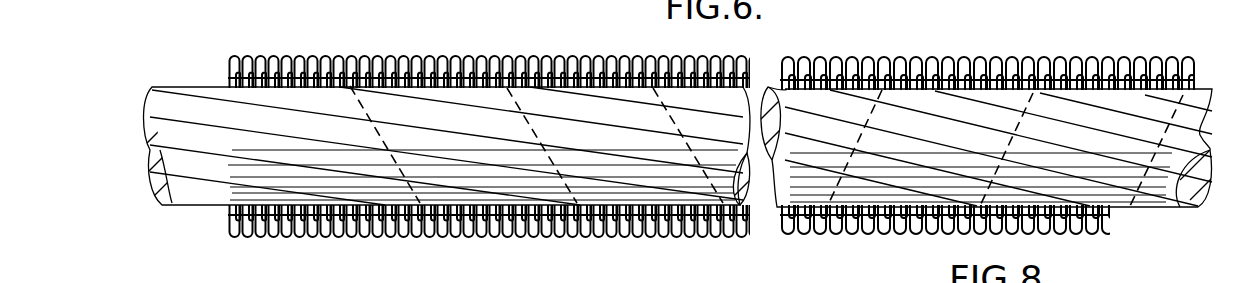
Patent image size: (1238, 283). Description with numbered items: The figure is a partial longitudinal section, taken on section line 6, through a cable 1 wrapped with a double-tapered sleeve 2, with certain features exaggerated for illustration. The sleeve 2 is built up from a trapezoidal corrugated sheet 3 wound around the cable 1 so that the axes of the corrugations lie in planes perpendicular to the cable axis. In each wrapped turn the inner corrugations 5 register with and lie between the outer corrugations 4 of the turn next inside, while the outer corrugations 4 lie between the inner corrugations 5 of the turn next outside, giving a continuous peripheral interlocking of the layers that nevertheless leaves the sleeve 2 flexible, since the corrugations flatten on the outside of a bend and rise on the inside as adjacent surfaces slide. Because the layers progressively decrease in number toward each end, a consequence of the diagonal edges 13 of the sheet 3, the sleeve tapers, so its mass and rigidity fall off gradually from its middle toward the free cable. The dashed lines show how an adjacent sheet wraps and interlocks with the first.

The cable 1 is at (245, 122).
The sleeve 2 is at (687, 58).
The corrugated sheet 3 is at (718, 217).
The outer corrugations 4 is at (788, 47).
The inner corrugations 5 is at (858, 57).
The section line 6 is at (640, 57).
The diagonal edges 13 is at (400, 162).